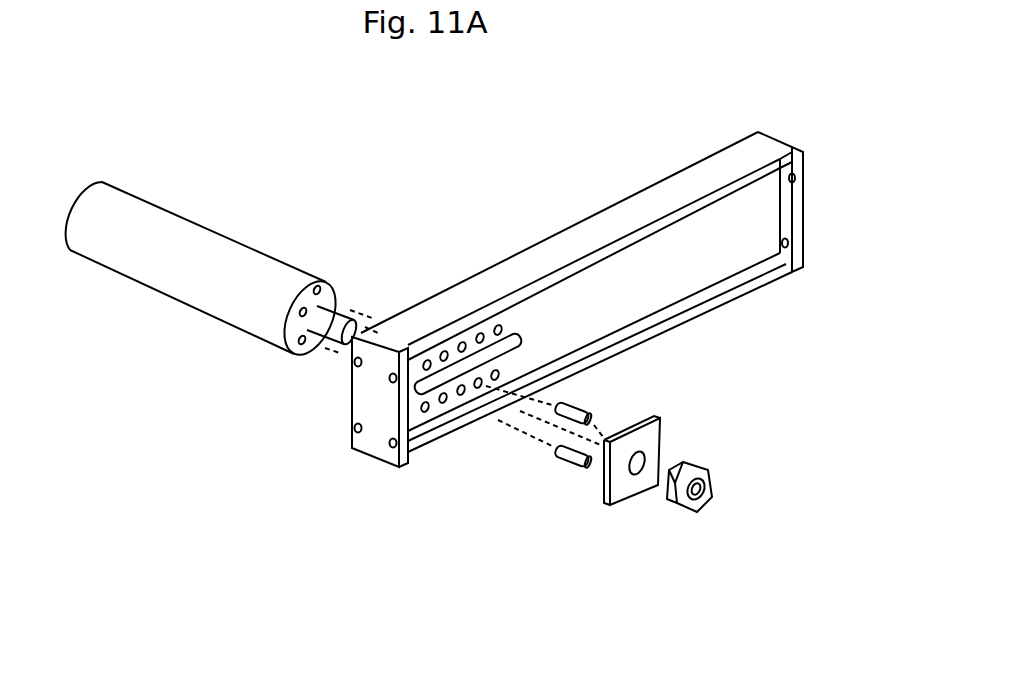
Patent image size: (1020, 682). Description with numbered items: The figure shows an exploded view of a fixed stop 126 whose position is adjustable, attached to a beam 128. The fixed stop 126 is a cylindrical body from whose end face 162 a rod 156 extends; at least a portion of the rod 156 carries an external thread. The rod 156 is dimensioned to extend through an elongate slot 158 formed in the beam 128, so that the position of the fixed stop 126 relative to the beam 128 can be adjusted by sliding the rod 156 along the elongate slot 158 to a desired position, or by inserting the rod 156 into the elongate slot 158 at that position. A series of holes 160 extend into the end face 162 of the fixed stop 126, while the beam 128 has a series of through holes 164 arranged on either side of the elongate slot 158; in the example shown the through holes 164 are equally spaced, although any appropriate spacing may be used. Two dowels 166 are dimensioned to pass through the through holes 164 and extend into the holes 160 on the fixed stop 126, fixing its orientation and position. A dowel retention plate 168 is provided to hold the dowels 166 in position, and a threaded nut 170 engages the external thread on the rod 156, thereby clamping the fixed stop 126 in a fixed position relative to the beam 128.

The fixed stop 126 is at (210, 286).
The holes 160 is at (323, 287).
The end face 162 is at (298, 328).
The rod 156 is at (343, 322).
The beam 128 is at (647, 252).
The elongate slot 158 is at (477, 360).
The through holes 164 is at (427, 411).
The dowels 166 is at (573, 468).
The dowel retention plate 168 is at (625, 487).
The threaded nut 170 is at (695, 512).